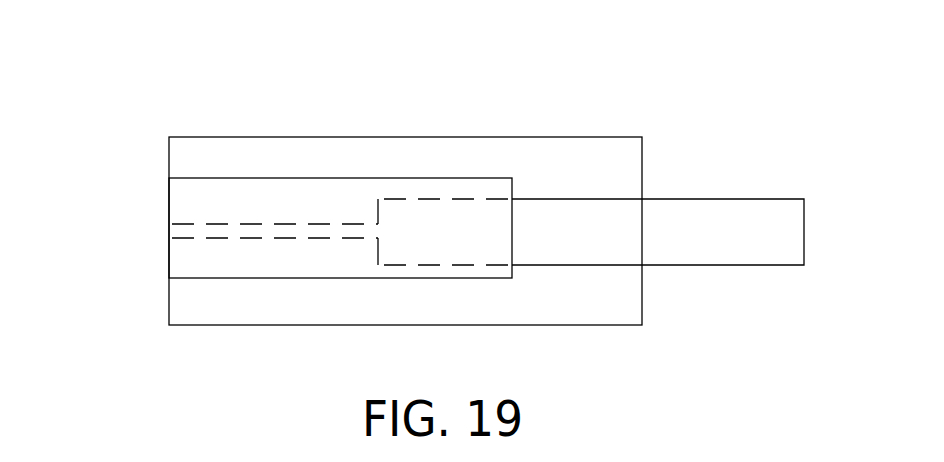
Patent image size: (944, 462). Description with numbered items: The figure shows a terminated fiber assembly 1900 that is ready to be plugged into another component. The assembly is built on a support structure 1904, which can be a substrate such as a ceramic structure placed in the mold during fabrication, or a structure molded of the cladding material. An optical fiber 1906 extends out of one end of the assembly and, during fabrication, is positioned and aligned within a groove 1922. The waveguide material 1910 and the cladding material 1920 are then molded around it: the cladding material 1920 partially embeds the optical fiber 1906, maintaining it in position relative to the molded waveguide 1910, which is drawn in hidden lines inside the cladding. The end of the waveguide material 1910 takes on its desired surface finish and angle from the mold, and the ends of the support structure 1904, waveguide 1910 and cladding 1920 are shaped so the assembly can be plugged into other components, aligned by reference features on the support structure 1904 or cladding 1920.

The terminated fiber assembly 1900 is at (342, 173).
The support structure 1904 is at (405, 204).
The cladding material 1920 is at (279, 211).
The waveguide material 1910 is at (279, 223).
The groove 1922 is at (626, 202).
The optical fiber 1906 is at (676, 265).